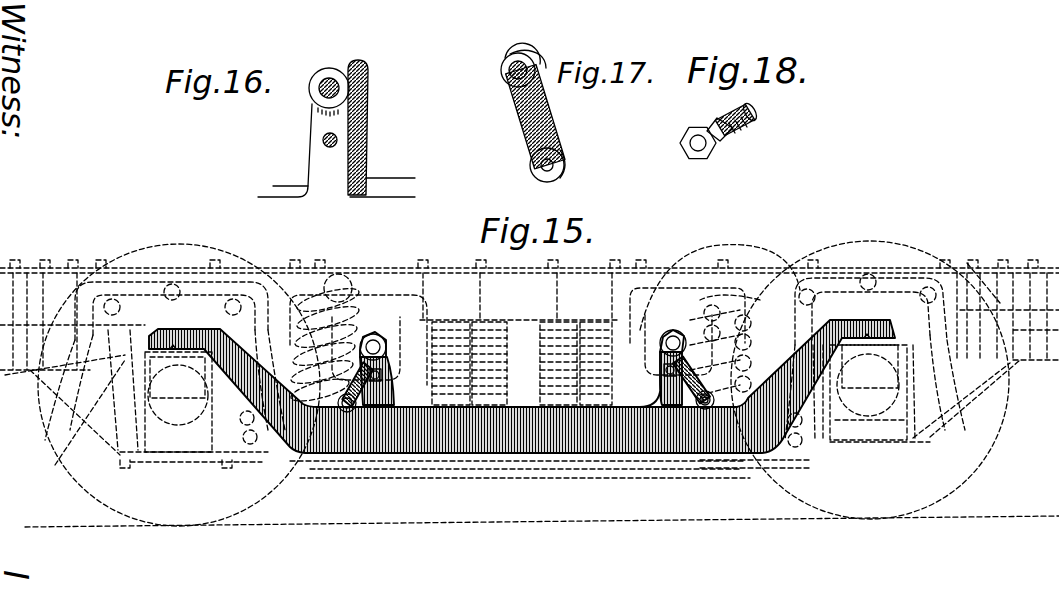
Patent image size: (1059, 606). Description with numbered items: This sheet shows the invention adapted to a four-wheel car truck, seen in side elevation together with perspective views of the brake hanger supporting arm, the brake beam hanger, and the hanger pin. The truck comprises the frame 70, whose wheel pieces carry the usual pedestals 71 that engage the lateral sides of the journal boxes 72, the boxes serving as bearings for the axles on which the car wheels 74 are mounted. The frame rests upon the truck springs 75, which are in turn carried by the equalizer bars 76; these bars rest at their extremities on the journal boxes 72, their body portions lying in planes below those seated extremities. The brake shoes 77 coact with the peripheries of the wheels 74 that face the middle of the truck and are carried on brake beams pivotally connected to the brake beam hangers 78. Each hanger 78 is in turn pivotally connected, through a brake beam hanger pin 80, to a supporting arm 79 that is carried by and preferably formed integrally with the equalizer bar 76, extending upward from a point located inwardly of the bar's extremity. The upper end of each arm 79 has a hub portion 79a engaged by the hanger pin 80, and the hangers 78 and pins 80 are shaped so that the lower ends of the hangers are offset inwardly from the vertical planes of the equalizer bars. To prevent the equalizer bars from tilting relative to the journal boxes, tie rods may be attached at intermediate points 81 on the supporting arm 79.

In FIG. 15, the frame 70 is at (642, 268).
In FIG. 15, the pedestals 71 is at (36, 420).
In FIG. 15, the journal boxes 72 is at (74, 468).
In FIG. 15, the car wheels 74 is at (232, 506).
In FIG. 15, the truck springs 75 is at (410, 456).
In FIG. 15, the equalizer bars 76 is at (696, 405).
In FIG. 15, the brake shoes 77 is at (728, 462).
In FIG. 17, the brake beam hangers 78 is at (530, 120).
In FIG. 15, the brake beam hangers 78 is at (526, 384).
In FIG. 16, the supporting arm 79 is at (330, 165).
In FIG. 15, the supporting arm 79 is at (668, 405).
In FIG. 16, the hub portions 79a is at (315, 78).
In FIG. 18, the brake beam hanger pins 80 is at (730, 137).
In FIG. 15, the brake beam hanger pins 80 is at (375, 336).
In FIG. 16, the intermediate points 81 is at (352, 138).
In FIG. 15, the intermediate points 81 is at (667, 378).